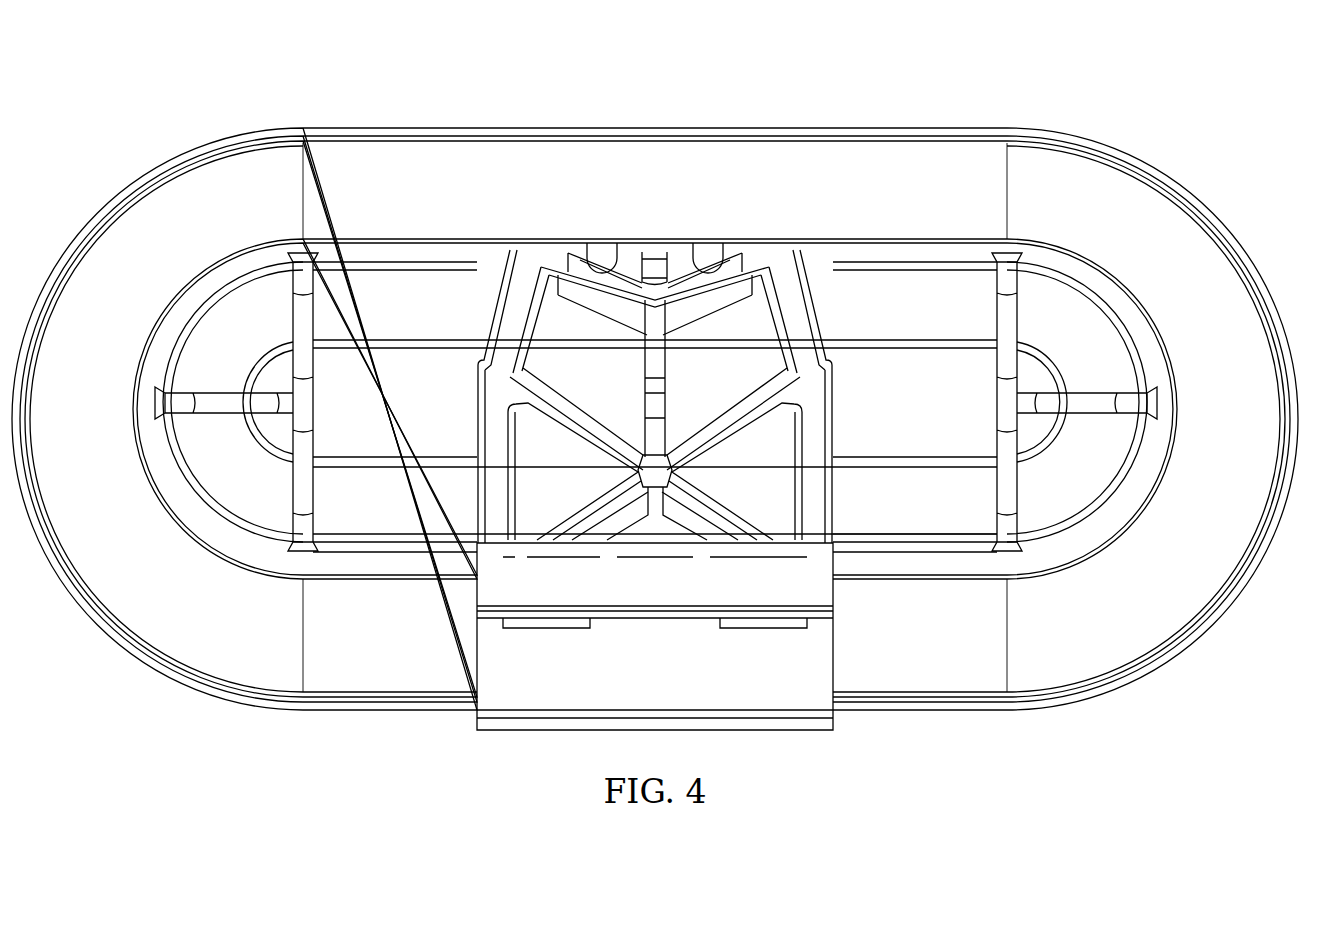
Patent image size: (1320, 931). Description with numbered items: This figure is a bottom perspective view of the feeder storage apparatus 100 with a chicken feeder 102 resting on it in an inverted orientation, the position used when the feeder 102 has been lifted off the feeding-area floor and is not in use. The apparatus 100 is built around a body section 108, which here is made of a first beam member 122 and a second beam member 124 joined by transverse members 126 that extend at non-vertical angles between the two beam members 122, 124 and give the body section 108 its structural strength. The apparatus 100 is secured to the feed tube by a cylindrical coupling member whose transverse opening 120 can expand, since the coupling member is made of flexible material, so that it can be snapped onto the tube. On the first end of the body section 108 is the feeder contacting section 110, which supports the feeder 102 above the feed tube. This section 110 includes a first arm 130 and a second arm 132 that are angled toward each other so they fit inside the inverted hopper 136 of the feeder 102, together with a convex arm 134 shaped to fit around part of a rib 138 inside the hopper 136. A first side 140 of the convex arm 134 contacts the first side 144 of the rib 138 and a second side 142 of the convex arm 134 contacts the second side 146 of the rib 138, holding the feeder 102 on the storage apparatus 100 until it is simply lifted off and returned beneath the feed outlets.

The feeder storage apparatus 100 is at (880, 597).
The chicken feeder 102 is at (985, 103).
The body section 108 is at (467, 490).
The feeder contacting section 110 is at (664, 384).
The transverse opening 120 is at (497, 665).
The first beam member 122 is at (477, 418).
The second beam member 124 is at (835, 418).
The transverse members 126 is at (617, 435).
The first arm 130 is at (518, 320).
The second arm 132 is at (805, 302).
The convex arm 134 is at (710, 300).
The hopper 136 is at (790, 128).
The rib 138 is at (648, 342).
The first side of the convex arm 140 is at (603, 262).
The second side of the convex arm 142 is at (707, 262).
The first side of the rib 144 is at (633, 262).
The second side of the rib 146 is at (687, 262).